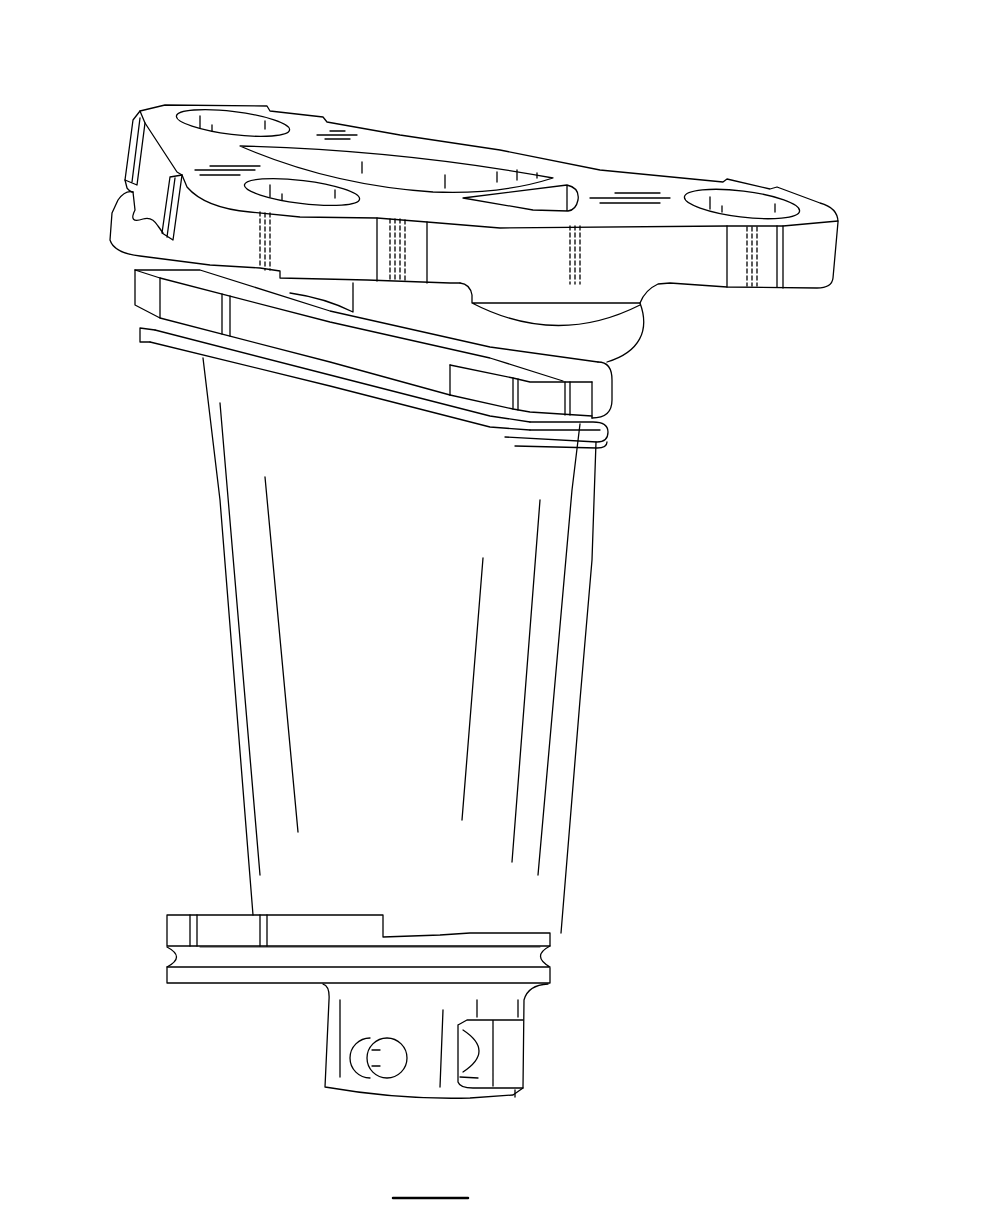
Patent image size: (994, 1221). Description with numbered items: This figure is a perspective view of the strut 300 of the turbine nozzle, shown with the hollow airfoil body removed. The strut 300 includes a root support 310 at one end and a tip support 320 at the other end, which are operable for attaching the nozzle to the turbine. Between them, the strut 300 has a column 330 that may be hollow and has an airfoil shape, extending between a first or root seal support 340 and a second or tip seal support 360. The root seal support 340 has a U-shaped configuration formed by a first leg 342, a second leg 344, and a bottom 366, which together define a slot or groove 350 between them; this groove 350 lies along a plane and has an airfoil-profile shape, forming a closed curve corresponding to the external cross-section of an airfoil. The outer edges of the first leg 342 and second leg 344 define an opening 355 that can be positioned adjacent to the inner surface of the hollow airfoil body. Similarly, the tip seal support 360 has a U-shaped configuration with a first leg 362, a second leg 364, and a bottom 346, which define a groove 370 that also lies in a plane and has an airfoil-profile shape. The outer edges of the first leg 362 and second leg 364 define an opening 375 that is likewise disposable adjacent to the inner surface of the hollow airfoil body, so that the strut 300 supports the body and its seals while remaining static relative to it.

The strut 300 is at (100, 65).
The root support 310 is at (650, 168).
The tip support 320 is at (497, 1099).
The column 330 is at (600, 696).
The root seal support 340 is at (660, 426).
The first leg 342 is at (602, 390).
The second leg 344 is at (604, 440).
The bottom 346 is at (580, 423).
The groove 350 is at (178, 337).
The opening 355 is at (124, 312).
The tip seal support 360 is at (620, 972).
The first leg 362 is at (550, 940).
The second leg 364 is at (552, 978).
The bottom 366 is at (552, 957).
The groove 370 is at (230, 965).
The opening 375 is at (157, 957).